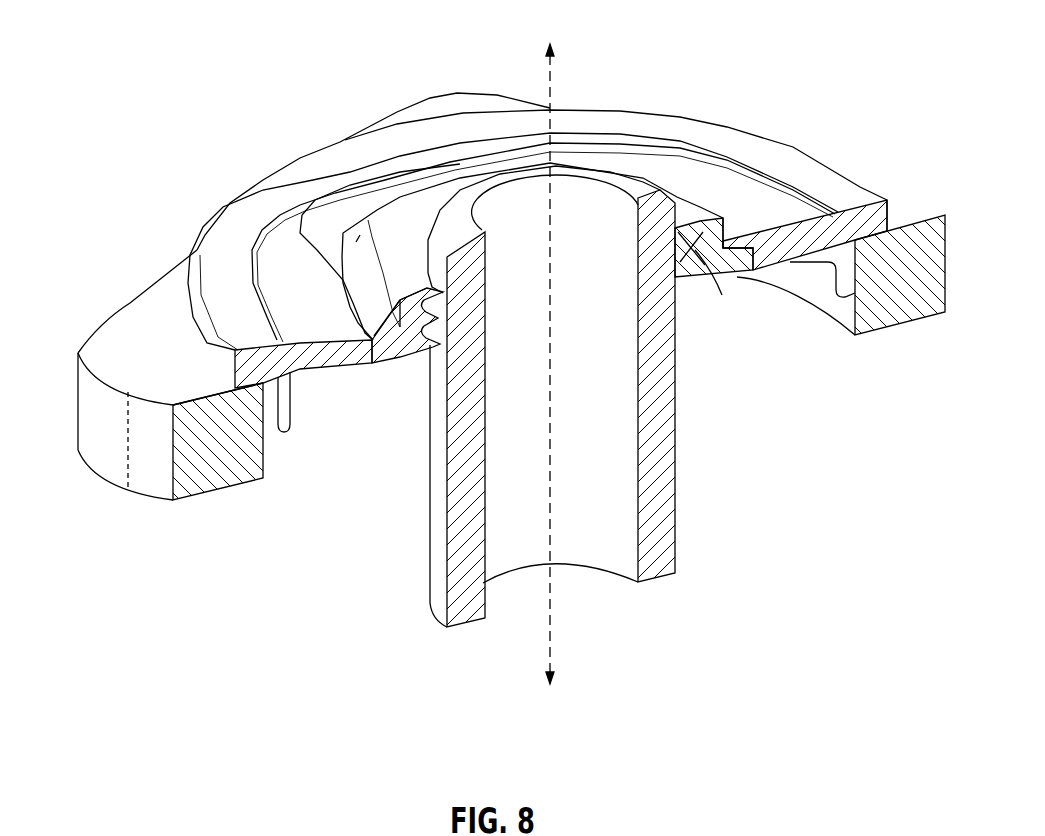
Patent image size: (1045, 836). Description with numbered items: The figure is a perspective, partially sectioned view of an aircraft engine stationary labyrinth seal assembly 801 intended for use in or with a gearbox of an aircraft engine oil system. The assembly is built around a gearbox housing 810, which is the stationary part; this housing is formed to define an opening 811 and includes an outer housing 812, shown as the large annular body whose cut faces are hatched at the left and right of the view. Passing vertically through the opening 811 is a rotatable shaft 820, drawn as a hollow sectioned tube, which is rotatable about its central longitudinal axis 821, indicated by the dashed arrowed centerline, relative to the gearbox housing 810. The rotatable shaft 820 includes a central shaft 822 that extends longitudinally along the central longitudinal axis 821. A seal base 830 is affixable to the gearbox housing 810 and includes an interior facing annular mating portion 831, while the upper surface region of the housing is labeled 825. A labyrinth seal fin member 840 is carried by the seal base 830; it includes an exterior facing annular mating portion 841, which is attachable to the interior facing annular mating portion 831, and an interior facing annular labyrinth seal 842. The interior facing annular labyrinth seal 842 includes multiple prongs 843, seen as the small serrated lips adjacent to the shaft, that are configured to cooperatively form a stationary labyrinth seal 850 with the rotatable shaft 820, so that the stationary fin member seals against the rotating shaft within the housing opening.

The aircraft engine stationary labyrinth seal assembly 801 is at (404, 48).
The gearbox housing 810 is at (490, 97).
The opening 811 is at (744, 400).
The outer housing 812 is at (110, 328).
The rotatable shaft 820 is at (455, 612).
The central longitudinal axis 821 is at (552, 611).
The central shaft 822 is at (602, 167).
The dome surface 825 is at (350, 107).
The seal base 830 is at (693, 173).
The interior facing annular mating portion 831 is at (360, 235).
The labyrinth seal fin member 840 is at (740, 237).
The exterior facing annular mating portion 841 is at (372, 330).
The interior facing annular labyrinth seal 842 is at (402, 285).
The prongs 843 is at (706, 272).
The stationary labyrinth seal 850 is at (416, 375).